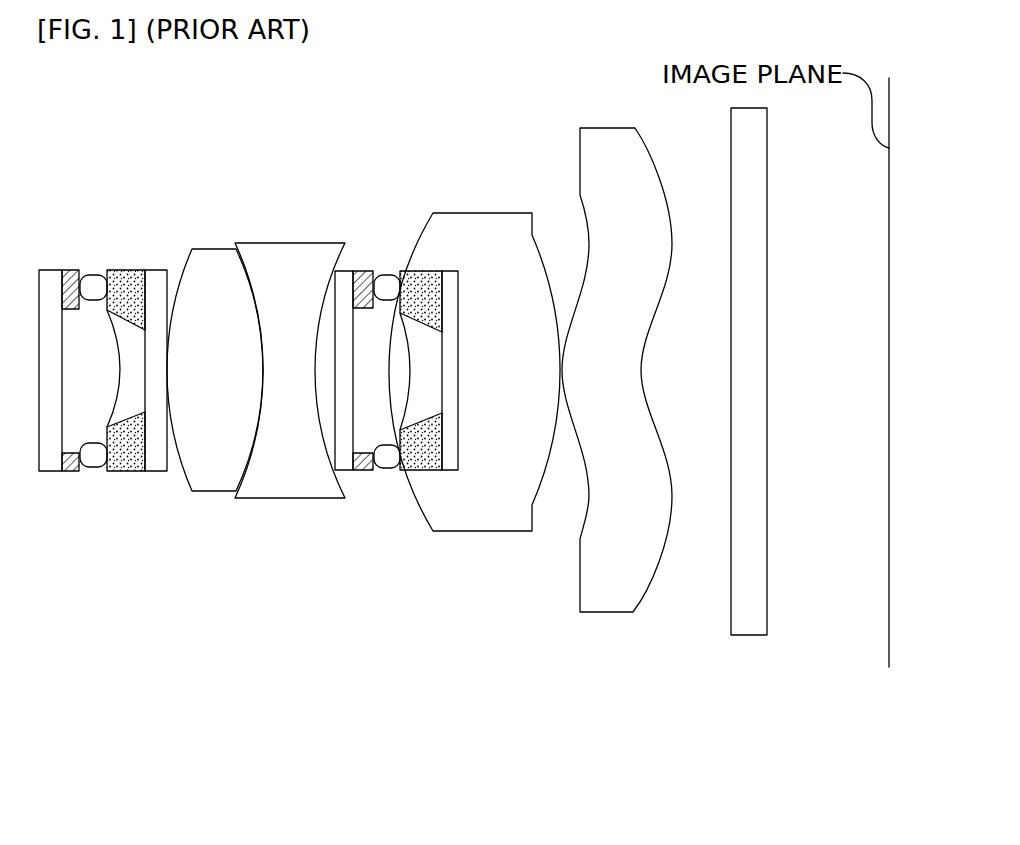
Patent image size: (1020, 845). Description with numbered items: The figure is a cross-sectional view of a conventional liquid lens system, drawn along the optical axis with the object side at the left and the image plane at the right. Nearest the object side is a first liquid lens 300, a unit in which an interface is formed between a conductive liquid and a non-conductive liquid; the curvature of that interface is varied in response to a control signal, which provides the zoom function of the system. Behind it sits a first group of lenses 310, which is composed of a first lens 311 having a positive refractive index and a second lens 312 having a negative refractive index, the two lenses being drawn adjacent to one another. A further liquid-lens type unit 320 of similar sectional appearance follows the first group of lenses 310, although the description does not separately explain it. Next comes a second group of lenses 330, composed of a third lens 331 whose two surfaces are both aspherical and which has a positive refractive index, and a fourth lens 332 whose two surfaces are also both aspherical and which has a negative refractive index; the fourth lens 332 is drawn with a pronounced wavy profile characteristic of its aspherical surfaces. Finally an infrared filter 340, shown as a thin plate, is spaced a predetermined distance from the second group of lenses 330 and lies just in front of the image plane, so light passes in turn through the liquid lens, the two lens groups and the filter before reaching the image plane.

The first liquid lens 300 is at (67, 488).
The first group of lenses 310 is at (234, 434).
The first lens 311 is at (197, 492).
The second lens 312 is at (293, 492).
The second lens holder assembly 320 is at (371, 490).
The second group of lenses 330 is at (530, 416).
The third lens 331 is at (483, 520).
The fourth lens 332 is at (605, 602).
The infrared filter 340 is at (739, 651).